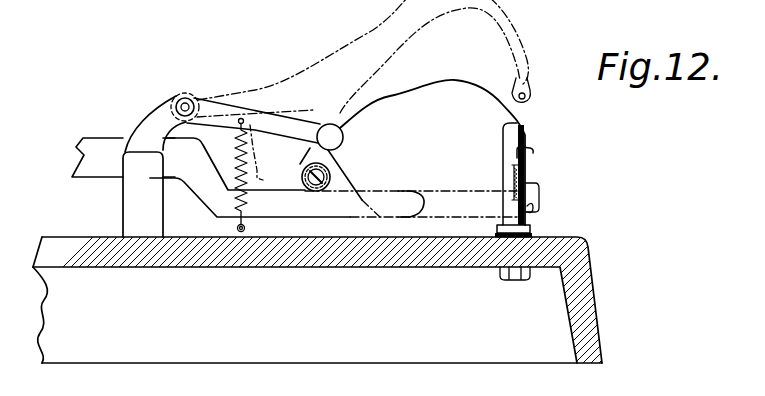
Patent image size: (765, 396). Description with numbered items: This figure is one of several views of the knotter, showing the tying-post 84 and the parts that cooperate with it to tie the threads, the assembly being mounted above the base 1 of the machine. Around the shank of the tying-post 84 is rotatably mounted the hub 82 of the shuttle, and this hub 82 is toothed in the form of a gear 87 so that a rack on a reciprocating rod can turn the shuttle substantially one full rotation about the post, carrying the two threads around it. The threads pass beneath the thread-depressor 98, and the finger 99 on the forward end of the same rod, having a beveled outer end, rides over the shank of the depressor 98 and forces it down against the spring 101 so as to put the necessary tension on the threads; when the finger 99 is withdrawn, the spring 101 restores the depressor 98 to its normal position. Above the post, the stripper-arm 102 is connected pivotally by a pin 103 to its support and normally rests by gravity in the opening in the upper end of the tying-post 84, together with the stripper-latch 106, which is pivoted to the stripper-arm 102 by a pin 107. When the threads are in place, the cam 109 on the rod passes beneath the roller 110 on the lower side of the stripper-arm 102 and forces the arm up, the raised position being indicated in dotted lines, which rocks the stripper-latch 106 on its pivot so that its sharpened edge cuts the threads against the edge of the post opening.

The base 1 is at (370, 300).
The hub 82 is at (536, 226).
The tying-post 84 is at (512, 180).
The gear 87 is at (497, 236).
The thread-depressor 98 is at (534, 152).
The finger 99 is at (420, 197).
The spring 101 is at (513, 167).
The stripper-arm 102 is at (430, 82).
The pin 103 is at (190, 97).
The stripper-latch 106 is at (527, 88).
The pin 107 is at (155, 124).
The cam 109 is at (208, 166).
The roller 110 is at (305, 189).